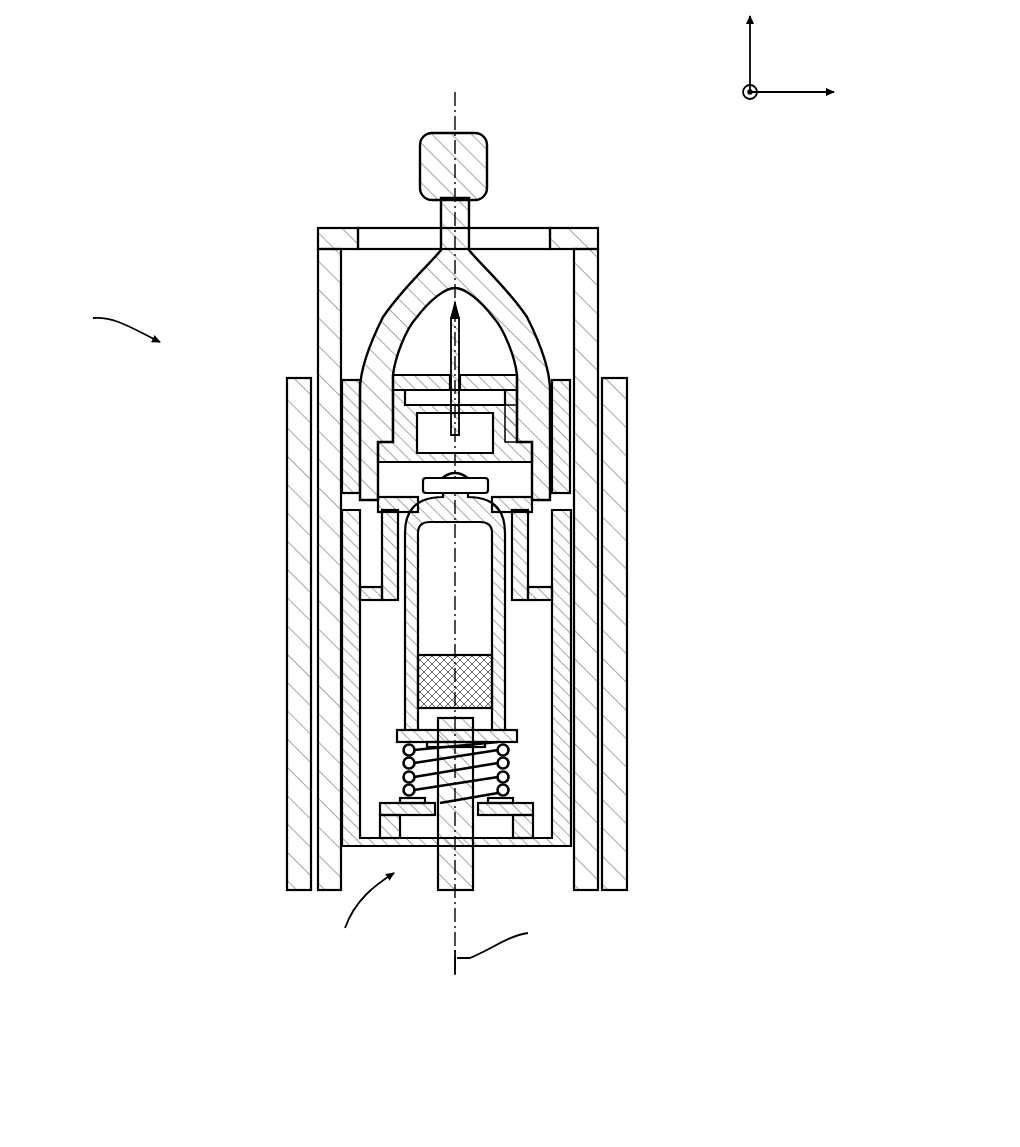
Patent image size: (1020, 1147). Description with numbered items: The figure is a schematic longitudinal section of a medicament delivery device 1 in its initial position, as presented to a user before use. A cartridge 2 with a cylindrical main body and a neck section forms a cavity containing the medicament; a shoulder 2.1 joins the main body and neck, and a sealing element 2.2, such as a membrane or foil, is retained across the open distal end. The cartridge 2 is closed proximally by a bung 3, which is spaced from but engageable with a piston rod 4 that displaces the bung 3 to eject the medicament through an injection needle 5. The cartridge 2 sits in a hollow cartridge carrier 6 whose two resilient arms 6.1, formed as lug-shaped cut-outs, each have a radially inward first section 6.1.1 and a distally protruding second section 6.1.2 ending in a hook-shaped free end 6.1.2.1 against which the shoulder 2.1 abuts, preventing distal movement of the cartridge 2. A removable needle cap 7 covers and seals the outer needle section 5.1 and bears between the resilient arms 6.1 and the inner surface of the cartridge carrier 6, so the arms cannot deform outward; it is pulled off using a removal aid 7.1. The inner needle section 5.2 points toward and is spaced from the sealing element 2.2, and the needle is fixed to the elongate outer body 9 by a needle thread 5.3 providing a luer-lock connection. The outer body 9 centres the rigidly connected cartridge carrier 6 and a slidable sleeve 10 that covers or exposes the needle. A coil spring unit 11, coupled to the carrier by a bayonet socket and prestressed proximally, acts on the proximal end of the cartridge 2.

The medicament delivery device 1 is at (558, 108).
The cartridge 2 is at (502, 712).
The shoulder 2.1 is at (487, 522).
The sealing element 2.2 is at (383, 455).
The bung 3 is at (435, 697).
The piston rod 4 is at (447, 884).
The injection needle 5 is at (450, 364).
The outer needle section 5.1 is at (453, 318).
The inner needle section 5.2 is at (397, 433).
The needle thread 5.3 is at (512, 426).
The cartridge carrier 6 is at (347, 785).
The resilient arms 6.1 is at (378, 568).
The first section 6.1.1 is at (372, 597).
The second section 6.1.2 is at (388, 533).
The hook-shaped free end 6.1.2.1 is at (398, 503).
The removable needle cap 7 is at (478, 283).
The removal aid 7.1 is at (433, 153).
The outer body 9 is at (618, 870).
The sleeve 10 is at (588, 322).
The coil spring unit 11 is at (503, 778).